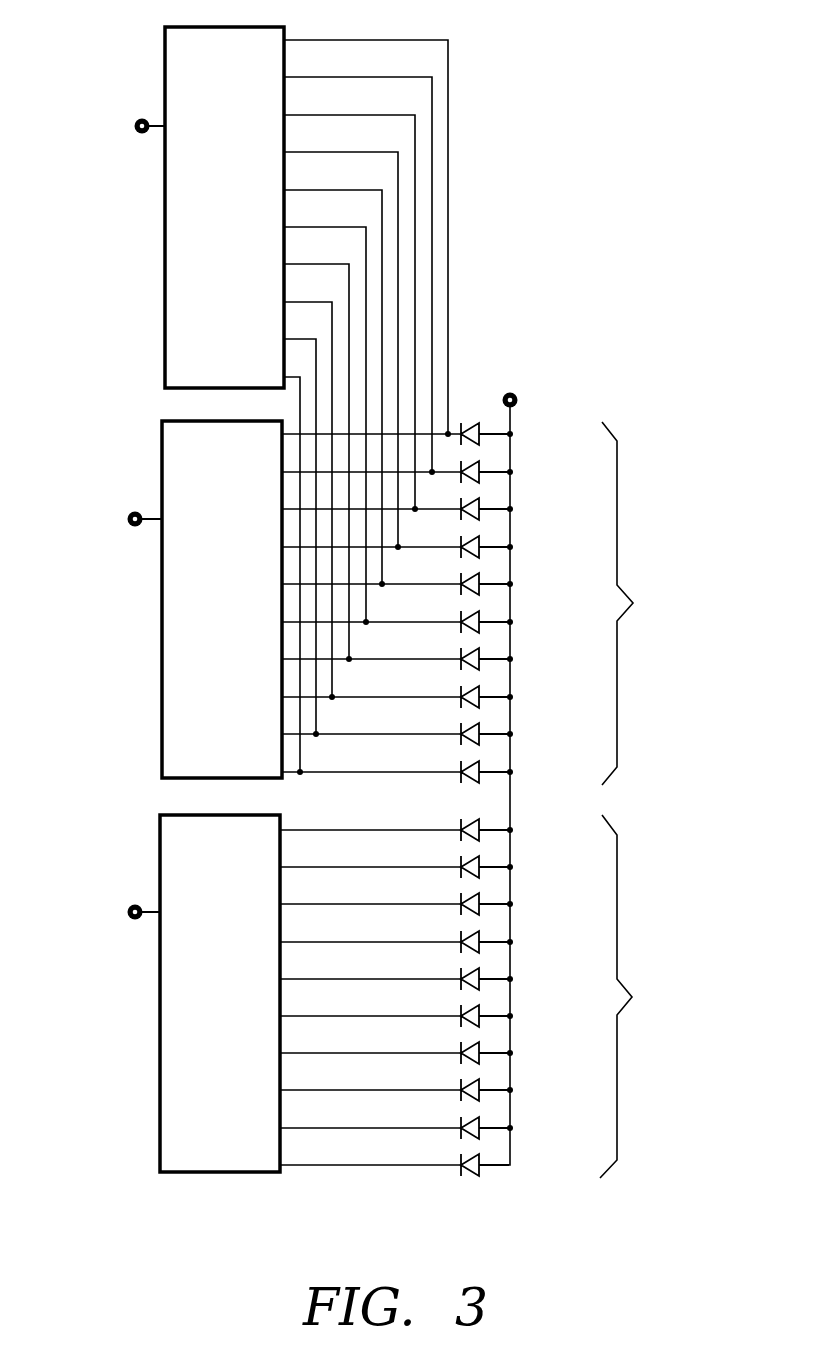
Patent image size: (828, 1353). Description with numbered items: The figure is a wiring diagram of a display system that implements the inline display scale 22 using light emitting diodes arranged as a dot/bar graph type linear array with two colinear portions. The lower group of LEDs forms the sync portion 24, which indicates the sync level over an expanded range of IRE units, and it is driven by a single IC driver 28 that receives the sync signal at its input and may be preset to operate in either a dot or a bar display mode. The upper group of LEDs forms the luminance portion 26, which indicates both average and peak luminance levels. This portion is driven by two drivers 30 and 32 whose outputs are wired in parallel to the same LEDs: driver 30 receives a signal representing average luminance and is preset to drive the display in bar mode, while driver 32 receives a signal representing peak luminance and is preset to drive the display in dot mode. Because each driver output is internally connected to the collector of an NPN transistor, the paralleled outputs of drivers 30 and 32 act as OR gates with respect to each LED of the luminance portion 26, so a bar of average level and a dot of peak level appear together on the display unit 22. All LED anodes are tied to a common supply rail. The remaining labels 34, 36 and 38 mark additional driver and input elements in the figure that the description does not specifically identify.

The display scale 22 is at (363, 1192).
The sync portion 24 is at (571, 996).
The luminance portion 26 is at (575, 603).
The IC driver 28 is at (168, 1053).
The driver 30 is at (157, 910).
The driver 32 is at (170, 660).
The luminance input terminal 34 is at (157, 518).
The LM3914 driver (upper luminance) 36 is at (172, 268).
The luminance input terminal 38 is at (160, 124).